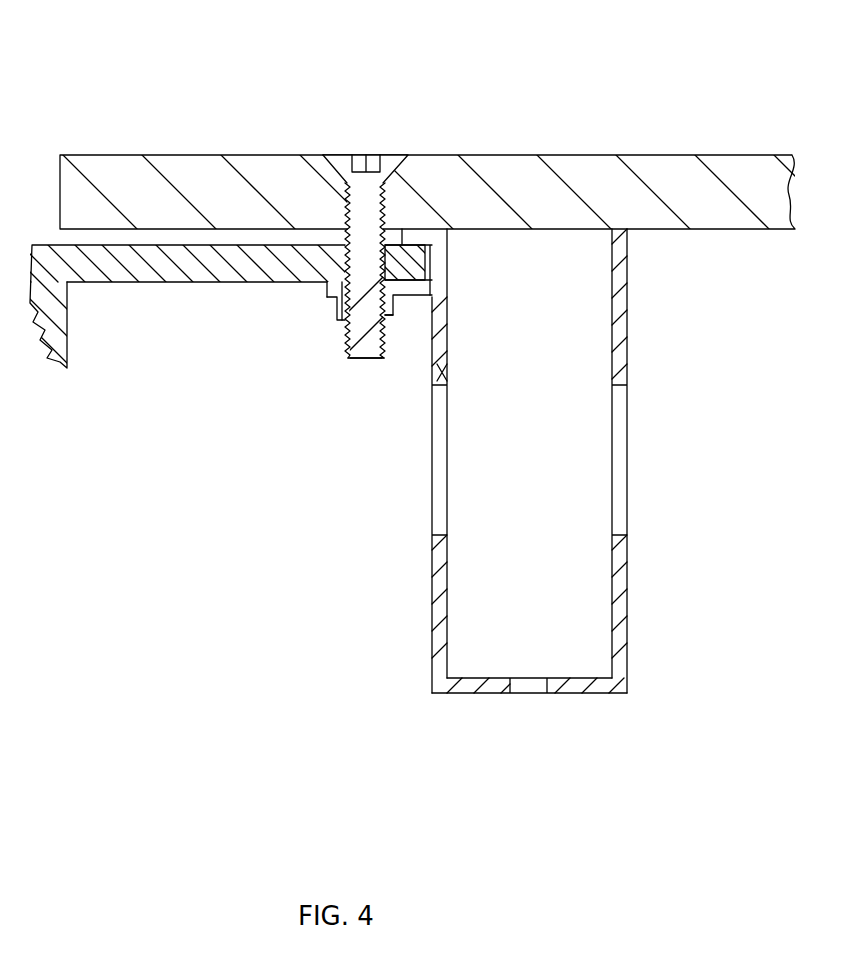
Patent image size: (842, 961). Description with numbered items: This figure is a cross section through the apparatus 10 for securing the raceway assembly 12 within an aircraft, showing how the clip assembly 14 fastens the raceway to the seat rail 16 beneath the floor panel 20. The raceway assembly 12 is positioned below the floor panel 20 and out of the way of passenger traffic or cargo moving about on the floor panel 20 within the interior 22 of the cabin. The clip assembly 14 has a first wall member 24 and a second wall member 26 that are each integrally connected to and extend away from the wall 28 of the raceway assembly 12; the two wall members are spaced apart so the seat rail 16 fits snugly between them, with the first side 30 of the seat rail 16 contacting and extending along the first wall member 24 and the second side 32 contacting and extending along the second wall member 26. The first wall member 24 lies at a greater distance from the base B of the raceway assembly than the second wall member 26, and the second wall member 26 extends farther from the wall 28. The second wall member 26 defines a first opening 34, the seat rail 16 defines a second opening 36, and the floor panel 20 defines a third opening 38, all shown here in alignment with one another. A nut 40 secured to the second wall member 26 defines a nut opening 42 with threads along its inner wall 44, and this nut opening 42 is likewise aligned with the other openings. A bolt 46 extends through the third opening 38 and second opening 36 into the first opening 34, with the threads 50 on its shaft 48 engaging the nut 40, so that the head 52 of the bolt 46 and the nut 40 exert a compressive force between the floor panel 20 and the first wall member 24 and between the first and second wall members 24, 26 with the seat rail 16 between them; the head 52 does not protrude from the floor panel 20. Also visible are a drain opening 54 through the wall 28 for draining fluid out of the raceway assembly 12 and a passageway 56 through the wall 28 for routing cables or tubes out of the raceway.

The apparatus 10 is at (245, 455).
The raceway assembly 12 is at (646, 348).
The clip assembly 14 is at (455, 218).
The seat rail 16 is at (148, 284).
The floor panel 20 is at (283, 167).
The interior 22 is at (396, 34).
The first wall member 24 is at (412, 238).
The second wall member 26 is at (408, 290).
The wall 28 is at (448, 375).
The first side 30 is at (340, 252).
The second side 32 is at (198, 284).
The first opening 34 is at (392, 262).
The second opening 36 is at (328, 268).
The third opening 38 is at (392, 210).
The nut 40 is at (330, 297).
The nut opening 42 is at (346, 326).
The inner wall 44 is at (370, 362).
The bolt 46 is at (337, 148).
The shaft 48 is at (392, 250).
The threads 50 is at (388, 343).
The head 52 is at (395, 153).
The drain opening 54 is at (550, 708).
The passageway 56 is at (650, 473).
The base B is at (478, 710).